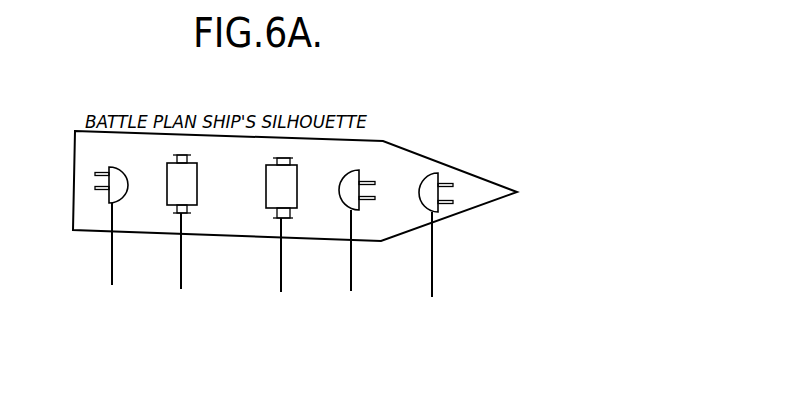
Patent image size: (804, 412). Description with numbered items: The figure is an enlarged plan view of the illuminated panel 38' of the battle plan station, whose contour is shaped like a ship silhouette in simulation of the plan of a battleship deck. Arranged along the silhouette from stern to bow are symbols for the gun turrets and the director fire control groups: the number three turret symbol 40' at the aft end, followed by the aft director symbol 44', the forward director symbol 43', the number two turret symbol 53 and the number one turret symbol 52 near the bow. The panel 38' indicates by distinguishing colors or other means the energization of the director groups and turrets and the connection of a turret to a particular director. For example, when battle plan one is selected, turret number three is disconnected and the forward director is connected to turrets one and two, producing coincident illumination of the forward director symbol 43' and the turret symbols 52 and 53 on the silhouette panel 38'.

The illuminated panel 38' is at (295, 186).
The No. 3 turret symbol 40' is at (93, 217).
The aft director symbol 44' is at (199, 222).
The forward director symbol 43' is at (297, 225).
The No. 2 turret symbol 53 is at (361, 207).
The No. 1 turret symbol 52 is at (454, 193).